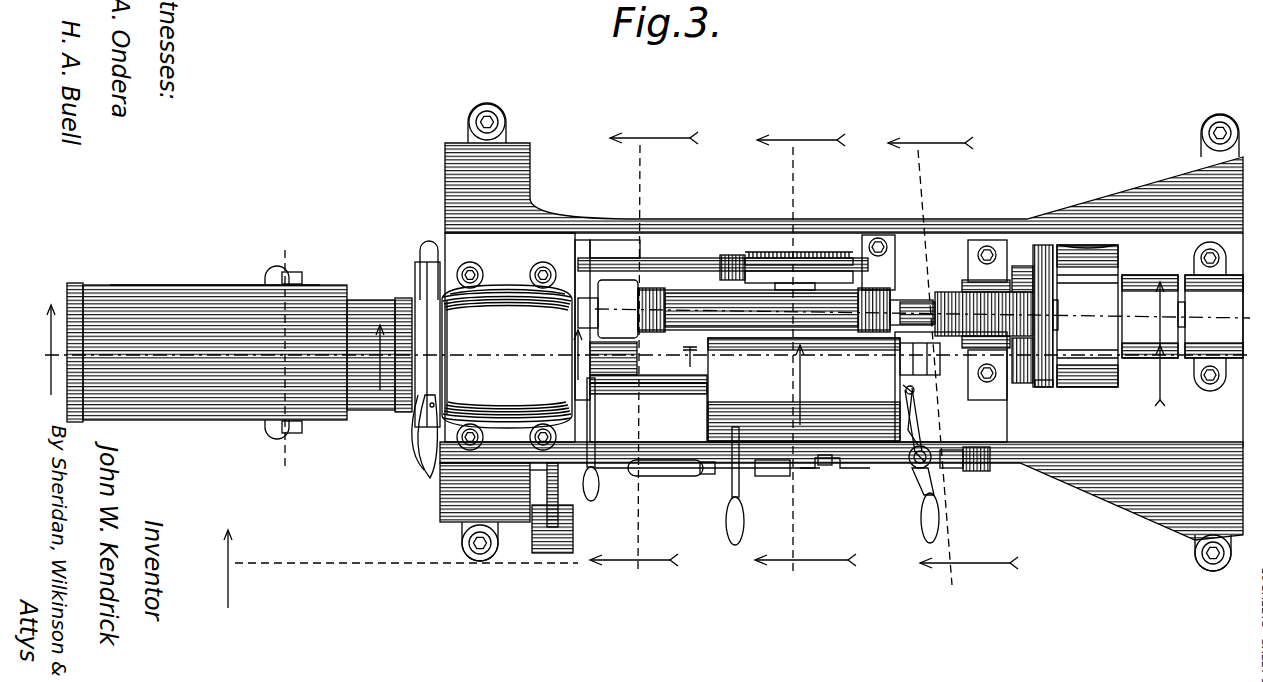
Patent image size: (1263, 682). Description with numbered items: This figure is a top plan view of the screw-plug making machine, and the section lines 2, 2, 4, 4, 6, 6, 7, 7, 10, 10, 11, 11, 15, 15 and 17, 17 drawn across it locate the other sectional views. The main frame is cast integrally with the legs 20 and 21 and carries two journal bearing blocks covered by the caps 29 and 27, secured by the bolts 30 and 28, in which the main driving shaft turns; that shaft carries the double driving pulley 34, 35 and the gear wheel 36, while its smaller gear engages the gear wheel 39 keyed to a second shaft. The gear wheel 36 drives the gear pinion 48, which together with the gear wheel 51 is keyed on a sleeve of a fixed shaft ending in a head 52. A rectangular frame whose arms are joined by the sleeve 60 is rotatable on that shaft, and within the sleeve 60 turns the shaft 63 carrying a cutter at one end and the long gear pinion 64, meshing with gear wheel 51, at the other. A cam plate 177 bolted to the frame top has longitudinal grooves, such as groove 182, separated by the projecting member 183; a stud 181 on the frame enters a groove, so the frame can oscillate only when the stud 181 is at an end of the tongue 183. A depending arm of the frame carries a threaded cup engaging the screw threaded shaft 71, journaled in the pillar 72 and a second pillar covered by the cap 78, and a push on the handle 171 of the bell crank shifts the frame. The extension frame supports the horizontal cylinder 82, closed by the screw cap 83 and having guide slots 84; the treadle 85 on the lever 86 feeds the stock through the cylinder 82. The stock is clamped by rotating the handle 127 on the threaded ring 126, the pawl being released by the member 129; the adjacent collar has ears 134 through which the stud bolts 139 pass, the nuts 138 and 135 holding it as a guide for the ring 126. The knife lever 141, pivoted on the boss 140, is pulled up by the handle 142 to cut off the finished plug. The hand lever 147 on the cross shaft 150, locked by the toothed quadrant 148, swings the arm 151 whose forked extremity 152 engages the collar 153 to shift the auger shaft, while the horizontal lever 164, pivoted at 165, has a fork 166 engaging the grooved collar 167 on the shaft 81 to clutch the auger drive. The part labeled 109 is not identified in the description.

The section line 2 2 is at (606, 350).
The section line 4 4 is at (689, 445).
The section line 6 6 is at (953, 358).
The section line 7 7 is at (805, 355).
The section line 10 10 is at (644, 355).
The section line 11 11 is at (480, 357).
The section line 15 15 is at (786, 385).
The section line 17 17 is at (313, 257).
The leg 20 is at (1200, 172).
The leg 21 is at (470, 165).
The cap 27 is at (1214, 316).
The bolt 28 is at (1198, 258).
The cap 29 is at (972, 280).
The bolt 30 is at (990, 252).
The double driving pulley 34 is at (1087, 316).
The double driving pulley 35 is at (1150, 316).
The gear wheel 36 is at (1045, 388).
The gear wheel 39 is at (1025, 385).
The gear pinion 48 is at (1043, 258).
The gear wheel 51 is at (1020, 265).
The head 52 is at (1060, 315).
The sleeve 60 is at (785, 310).
The rotatable shaft 63 is at (915, 300).
The long gear pinion 64 is at (940, 292).
The screw threaded shaft 71 is at (692, 258).
The pillar 72 is at (878, 262).
The cap 78 is at (482, 357).
The shaft 81 is at (680, 390).
The horizontal cylinder 82 is at (215, 352).
The screw cap 83 is at (80, 420).
The horizontal guide slots 84 is at (205, 285).
The treadle 85 is at (550, 555).
The lever 86 is at (558, 490).
The cylinder neck 109 is at (400, 298).
The ring 126 is at (440, 345).
The handle 127 is at (430, 475).
The member 129 is at (416, 450).
The ears 134 is at (420, 268).
The nut 135 is at (400, 302).
The nut 138 is at (425, 245).
The stud bolts 139 is at (500, 300).
The boss 140 is at (568, 392).
The lever 141 is at (596, 465).
The handle 142 is at (599, 490).
The lever 147 is at (834, 470).
The toothed quadrant 148 is at (790, 472).
The cross shaft 150 is at (985, 470).
The arm 151 is at (952, 468).
The forked extremity 152 is at (905, 348).
The collar 153 is at (905, 365).
The horizontal lever 164 is at (932, 490).
The pivot 165 is at (917, 470).
The fork 166 is at (915, 440).
The grooved collar 167 is at (912, 395).
The handle 171 is at (728, 525).
The cam plate 177 is at (732, 255).
The stud 181 is at (848, 255).
The longitudinal groove 182 is at (798, 283).
The projecting member 183 is at (820, 271).